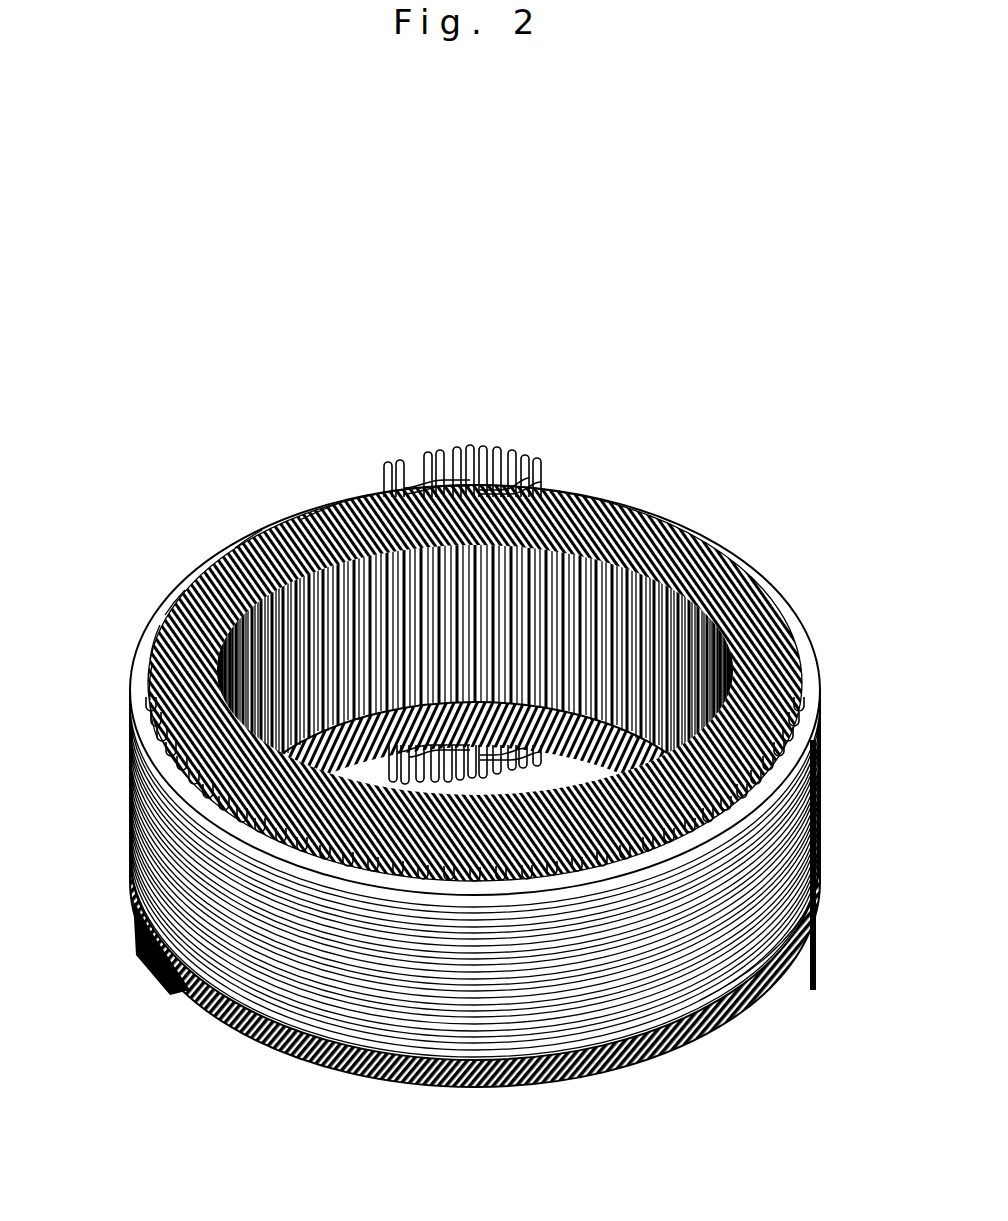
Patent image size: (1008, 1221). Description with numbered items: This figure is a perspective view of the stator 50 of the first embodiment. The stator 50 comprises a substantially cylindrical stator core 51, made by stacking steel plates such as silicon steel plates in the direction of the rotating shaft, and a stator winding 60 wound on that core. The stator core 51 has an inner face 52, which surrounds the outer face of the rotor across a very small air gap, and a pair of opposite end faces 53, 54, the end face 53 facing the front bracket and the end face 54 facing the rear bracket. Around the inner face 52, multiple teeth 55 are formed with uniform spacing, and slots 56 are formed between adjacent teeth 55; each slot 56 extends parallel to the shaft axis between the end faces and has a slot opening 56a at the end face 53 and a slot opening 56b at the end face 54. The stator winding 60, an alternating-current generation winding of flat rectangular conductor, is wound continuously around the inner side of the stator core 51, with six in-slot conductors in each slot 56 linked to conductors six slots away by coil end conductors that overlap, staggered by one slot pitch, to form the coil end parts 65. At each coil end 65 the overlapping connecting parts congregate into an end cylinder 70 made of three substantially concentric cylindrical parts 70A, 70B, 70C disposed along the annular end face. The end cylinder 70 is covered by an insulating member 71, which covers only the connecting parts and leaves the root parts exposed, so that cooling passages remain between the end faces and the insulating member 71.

The stator 50 is at (778, 594).
The stator core 51 is at (813, 767).
The inner face 52 is at (703, 667).
The end face 53 is at (807, 703).
The end face 54 is at (803, 893).
The teeth 55 is at (600, 612).
The slots 56 is at (663, 510).
The slot opening 56a is at (597, 490).
The slot opening 56b is at (571, 752).
The stator winding 60 is at (173, 597).
The coil end part 65 is at (247, 537).
The end cylinder 70 is at (323, 500).
The cylindrical part 70A is at (147, 720).
The cylindrical part 70B is at (148, 673).
The cylindrical part 70C is at (153, 635).
The insulating member 71 is at (277, 517).